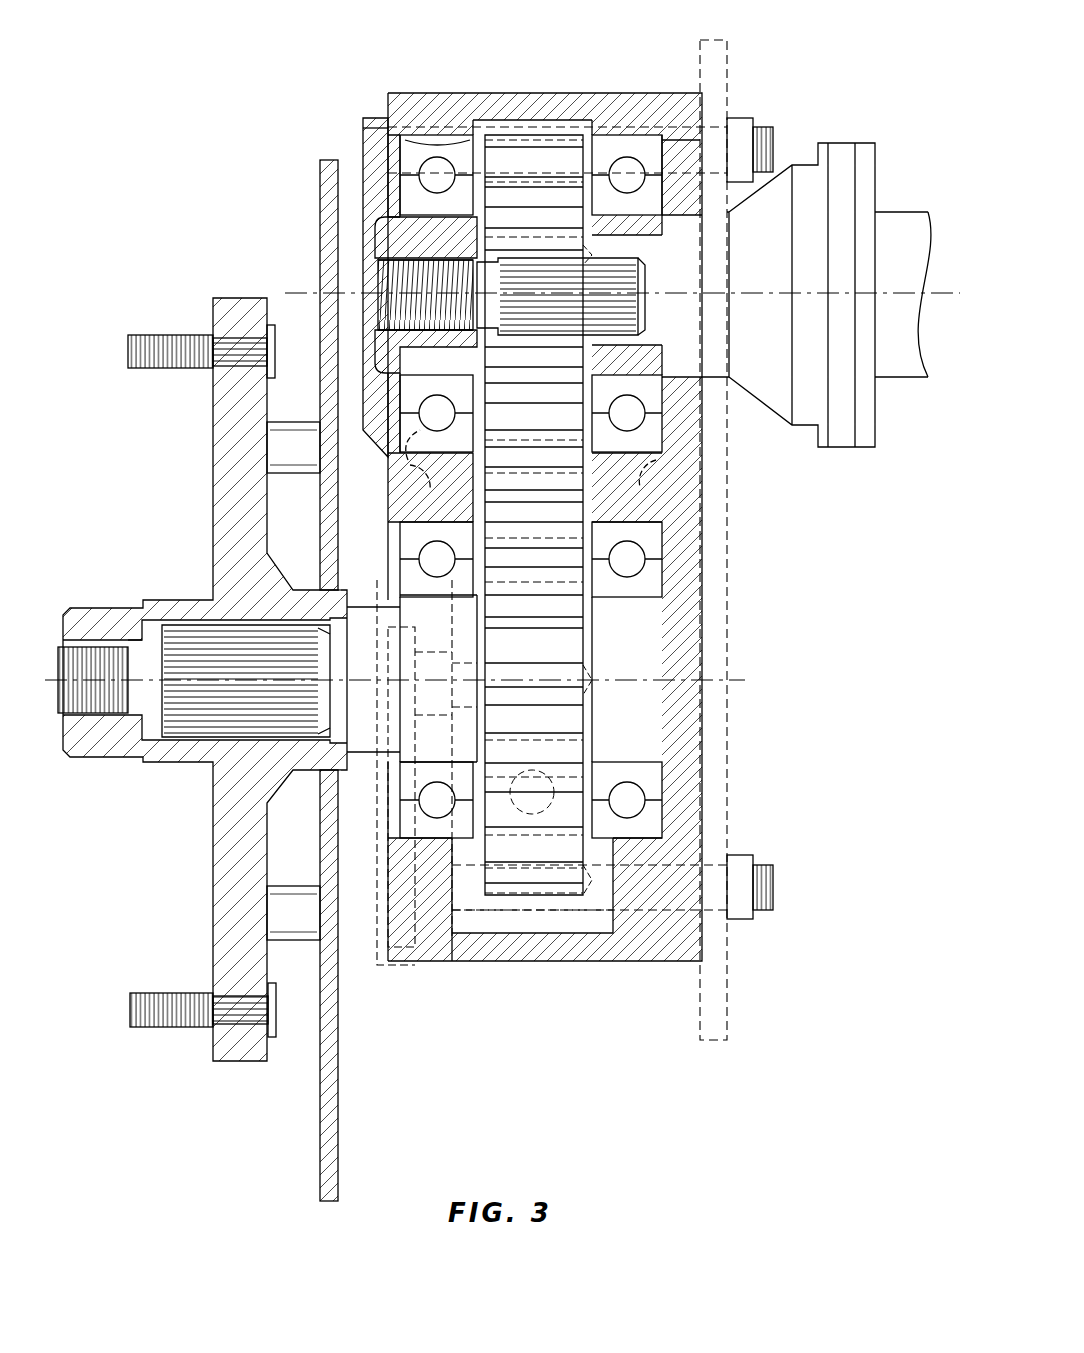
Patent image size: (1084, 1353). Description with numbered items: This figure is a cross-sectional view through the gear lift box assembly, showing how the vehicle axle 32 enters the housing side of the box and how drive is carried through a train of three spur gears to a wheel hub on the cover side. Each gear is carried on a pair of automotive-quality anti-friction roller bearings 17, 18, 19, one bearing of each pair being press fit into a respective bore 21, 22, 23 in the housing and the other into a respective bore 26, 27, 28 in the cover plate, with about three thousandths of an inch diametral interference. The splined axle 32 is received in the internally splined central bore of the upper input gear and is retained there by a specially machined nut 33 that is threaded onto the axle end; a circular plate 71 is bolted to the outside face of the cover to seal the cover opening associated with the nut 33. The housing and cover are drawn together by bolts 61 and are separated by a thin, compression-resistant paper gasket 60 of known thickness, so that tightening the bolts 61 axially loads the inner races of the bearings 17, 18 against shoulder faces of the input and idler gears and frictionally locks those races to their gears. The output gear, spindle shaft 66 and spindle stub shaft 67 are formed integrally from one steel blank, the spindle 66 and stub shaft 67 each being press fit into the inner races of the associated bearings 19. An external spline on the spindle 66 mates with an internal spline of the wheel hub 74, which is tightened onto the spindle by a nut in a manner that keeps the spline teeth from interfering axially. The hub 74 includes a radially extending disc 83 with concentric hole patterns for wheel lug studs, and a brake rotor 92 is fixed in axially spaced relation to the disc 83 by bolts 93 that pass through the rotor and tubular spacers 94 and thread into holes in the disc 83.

The anti-friction roller bearings 17 is at (462, 137).
The anti-friction roller bearings 18 is at (658, 460).
The anti-friction roller bearings 19 is at (670, 580).
The bore 21 is at (690, 147).
The bore 22 is at (650, 478).
The bore 23 is at (650, 523).
The bore 26 is at (418, 150).
The bore 27 is at (380, 481).
The bore 28 is at (430, 522).
The axle 32 is at (895, 212).
The machined nut 33 is at (375, 245).
The gasket 60 is at (450, 933).
The bolts 61 is at (766, 127).
The spindle shaft 66 is at (430, 762).
The spindle stub shaft 67 is at (652, 763).
The circular plate 71 is at (366, 150).
The wheel hub 74 is at (176, 592).
The disc 83 is at (213, 897).
The brake rotor 92 is at (322, 1162).
The bolts 93 is at (345, 470).
The tubular spacers 94 is at (292, 422).